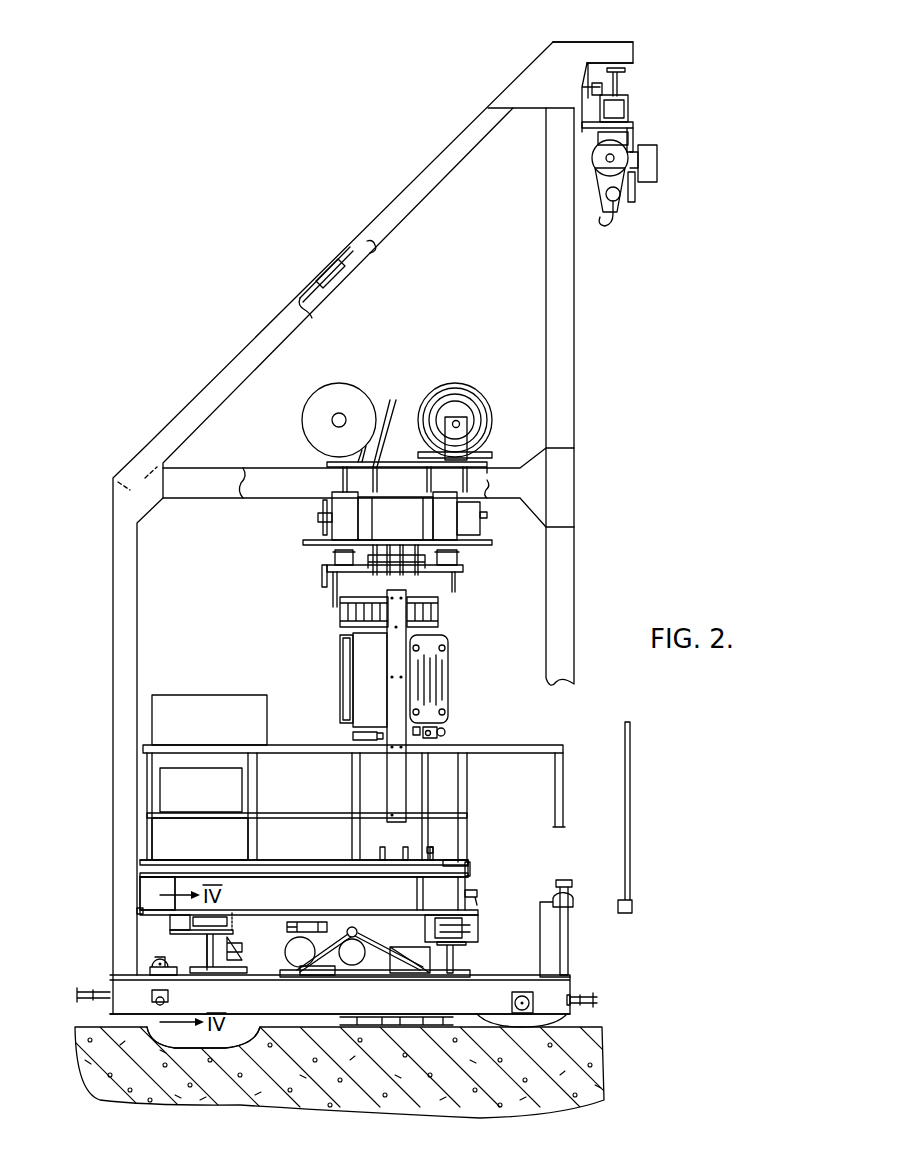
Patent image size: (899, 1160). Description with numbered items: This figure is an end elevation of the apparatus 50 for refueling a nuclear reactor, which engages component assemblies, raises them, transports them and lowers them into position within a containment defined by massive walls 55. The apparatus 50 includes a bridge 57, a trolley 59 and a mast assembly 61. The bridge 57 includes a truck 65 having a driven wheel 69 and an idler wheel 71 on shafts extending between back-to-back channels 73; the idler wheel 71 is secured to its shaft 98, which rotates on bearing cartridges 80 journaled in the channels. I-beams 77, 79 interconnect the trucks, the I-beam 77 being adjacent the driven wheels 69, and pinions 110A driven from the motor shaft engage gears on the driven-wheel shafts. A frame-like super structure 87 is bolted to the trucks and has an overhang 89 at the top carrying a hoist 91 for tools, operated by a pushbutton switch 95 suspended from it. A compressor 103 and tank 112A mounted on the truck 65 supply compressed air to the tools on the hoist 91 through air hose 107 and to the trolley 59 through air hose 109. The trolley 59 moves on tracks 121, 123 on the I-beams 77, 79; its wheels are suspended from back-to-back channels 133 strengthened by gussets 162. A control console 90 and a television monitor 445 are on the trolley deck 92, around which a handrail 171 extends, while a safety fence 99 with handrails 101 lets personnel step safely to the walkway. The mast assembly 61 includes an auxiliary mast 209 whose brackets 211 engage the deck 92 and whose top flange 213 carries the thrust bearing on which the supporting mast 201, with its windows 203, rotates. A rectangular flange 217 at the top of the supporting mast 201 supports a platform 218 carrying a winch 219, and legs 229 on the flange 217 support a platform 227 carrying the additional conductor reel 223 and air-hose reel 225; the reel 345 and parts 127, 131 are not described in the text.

The apparatus 50 is at (640, 454).
The super structure 87 is at (424, 172).
The overhang 89 is at (588, 44).
The hoist 91 is at (640, 132).
The additional air-hose reel 225 is at (355, 390).
The drum 345 is at (434, 393).
The additional reel for electric conductors 223 is at (478, 404).
The platform 227 is at (490, 457).
The legs 229 is at (337, 478).
The winch 219 is at (400, 486).
The platform 218 is at (488, 542).
The rectangular flange 217 is at (467, 578).
The auxiliary mast 209 is at (420, 790).
The supporting mast 201 is at (369, 678).
The windows 203 is at (443, 680).
The mast assembly 61 is at (453, 726).
The flange 213 is at (350, 735).
The handrail 171 is at (458, 744).
The handrails 101 is at (545, 747).
The control console 90 is at (210, 696).
The television monitor 445 is at (243, 782).
The deck 92 is at (218, 847).
The trolley 59 is at (160, 868).
The gussets 162 is at (412, 876).
The brackets 211 is at (432, 852).
The back-to-back channels 133 is at (448, 864).
The safety fence 99 is at (505, 866).
The platform assembly 127 is at (542, 884).
The hook 131 is at (480, 905).
The air hose 107 is at (390, 912).
The track 123 is at (460, 928).
The I-beam 79 is at (455, 952).
The compressor 103 is at (308, 924).
The track 121 is at (205, 928).
The air hose 109 is at (306, 952).
The pinions 110A is at (153, 962).
The channel 73 is at (120, 988).
The I-beam 77 is at (213, 977).
The tank 112A is at (335, 975).
The idler wheel 71 is at (507, 1023).
The bearing cartridges 80 is at (511, 996).
The shafts 98 is at (562, 990).
The truck 65 is at (569, 967).
The pushbutton switch 95 is at (620, 906).
The bridge 57 is at (93, 1010).
The walls 55 is at (600, 1052).
The driven wheel 69 is at (150, 1043).